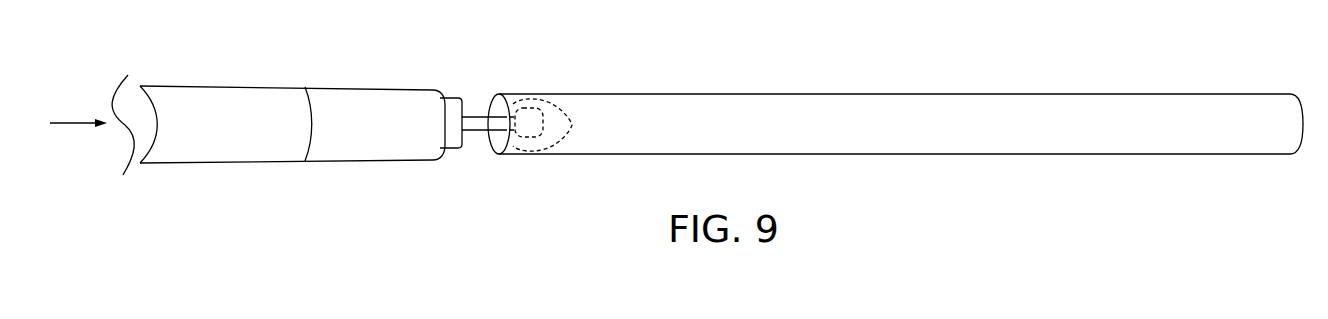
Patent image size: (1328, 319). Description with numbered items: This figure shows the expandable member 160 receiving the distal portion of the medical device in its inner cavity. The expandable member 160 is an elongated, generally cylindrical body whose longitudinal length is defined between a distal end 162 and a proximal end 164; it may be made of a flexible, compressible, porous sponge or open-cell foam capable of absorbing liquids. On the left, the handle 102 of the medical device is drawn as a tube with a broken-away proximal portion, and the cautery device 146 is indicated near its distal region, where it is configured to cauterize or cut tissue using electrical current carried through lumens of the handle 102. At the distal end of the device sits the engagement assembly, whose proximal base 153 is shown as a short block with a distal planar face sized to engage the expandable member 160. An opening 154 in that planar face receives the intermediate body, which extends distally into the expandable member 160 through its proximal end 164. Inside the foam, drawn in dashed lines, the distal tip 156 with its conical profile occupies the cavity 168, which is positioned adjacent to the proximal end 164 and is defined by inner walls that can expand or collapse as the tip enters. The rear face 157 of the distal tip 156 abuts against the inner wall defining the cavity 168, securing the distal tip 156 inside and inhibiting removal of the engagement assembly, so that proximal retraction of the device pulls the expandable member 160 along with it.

The handle 102 is at (212, 172).
The cautery device 146 is at (344, 172).
The proximal base 153 is at (450, 102).
The opening 154 is at (480, 132).
The distal tip 156 is at (543, 150).
The rear face 157 is at (543, 108).
The expandable member 160 is at (858, 72).
The distal end 162 is at (1262, 98).
The proximal end 164 is at (510, 97).
The cavity 168 is at (564, 99).